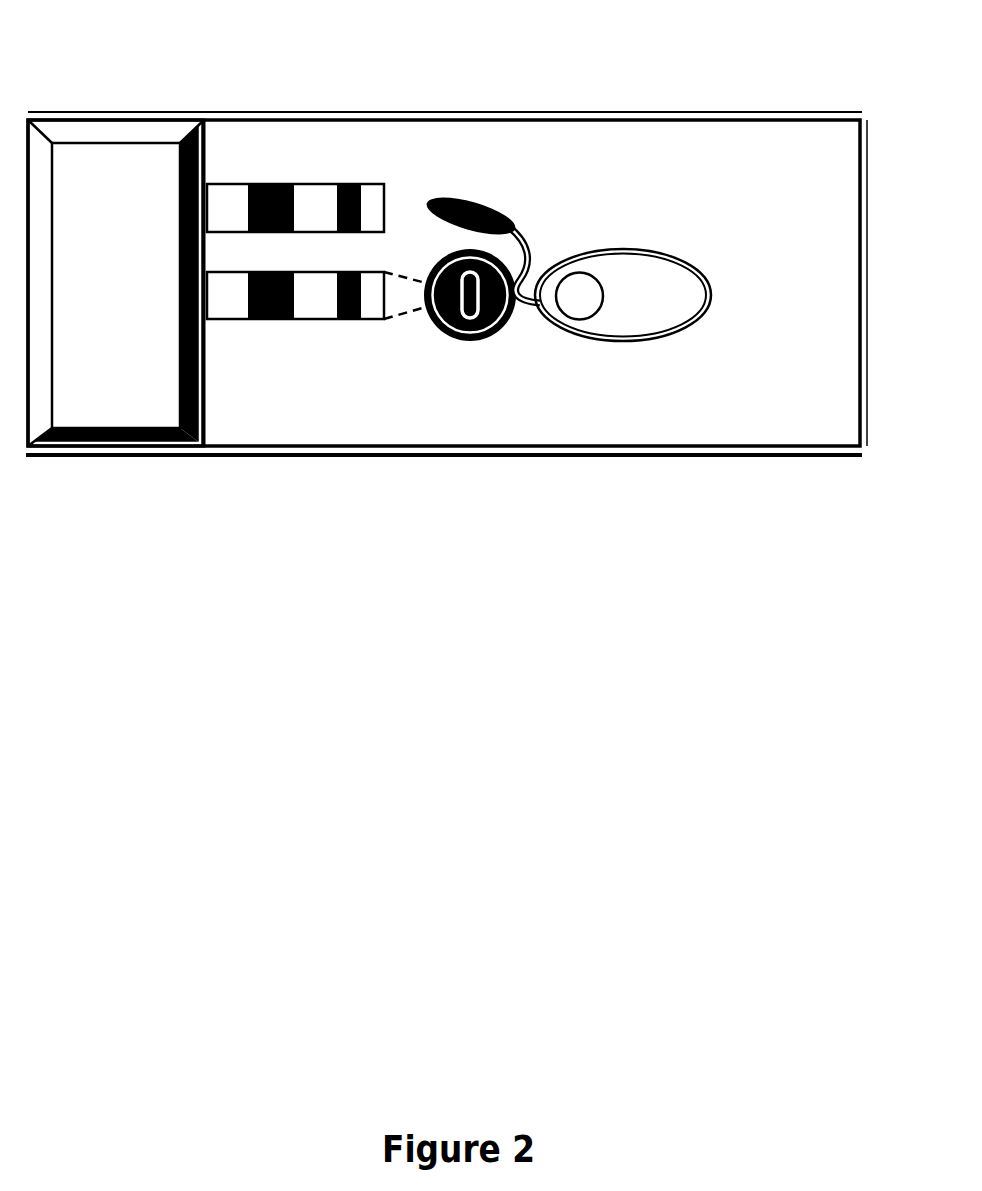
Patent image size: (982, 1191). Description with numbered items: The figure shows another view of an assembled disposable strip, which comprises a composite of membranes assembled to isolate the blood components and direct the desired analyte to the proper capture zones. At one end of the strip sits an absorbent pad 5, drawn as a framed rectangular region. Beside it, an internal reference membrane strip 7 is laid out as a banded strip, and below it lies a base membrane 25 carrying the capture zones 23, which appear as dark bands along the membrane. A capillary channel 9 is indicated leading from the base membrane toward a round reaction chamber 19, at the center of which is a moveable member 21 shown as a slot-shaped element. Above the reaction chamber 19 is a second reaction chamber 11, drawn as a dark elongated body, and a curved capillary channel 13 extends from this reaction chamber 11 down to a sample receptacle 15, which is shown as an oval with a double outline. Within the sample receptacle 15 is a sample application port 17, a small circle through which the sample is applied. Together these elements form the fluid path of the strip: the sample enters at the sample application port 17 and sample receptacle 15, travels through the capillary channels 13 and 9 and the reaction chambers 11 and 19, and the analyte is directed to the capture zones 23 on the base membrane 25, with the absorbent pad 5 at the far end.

The absorbent pad 5 is at (94, 185).
The internal reference membrane strip 7 is at (313, 184).
The capillary channel 9 is at (401, 295).
The reaction chamber 11 is at (467, 202).
The capillary channel 13 is at (531, 250).
The sample receptacle 15 is at (625, 247).
The sample application port 17 is at (588, 317).
The reaction chamber 19 is at (486, 338).
The moveable member 21 is at (468, 320).
The capture zones 23 is at (363, 322).
The base membrane 25 is at (226, 319).